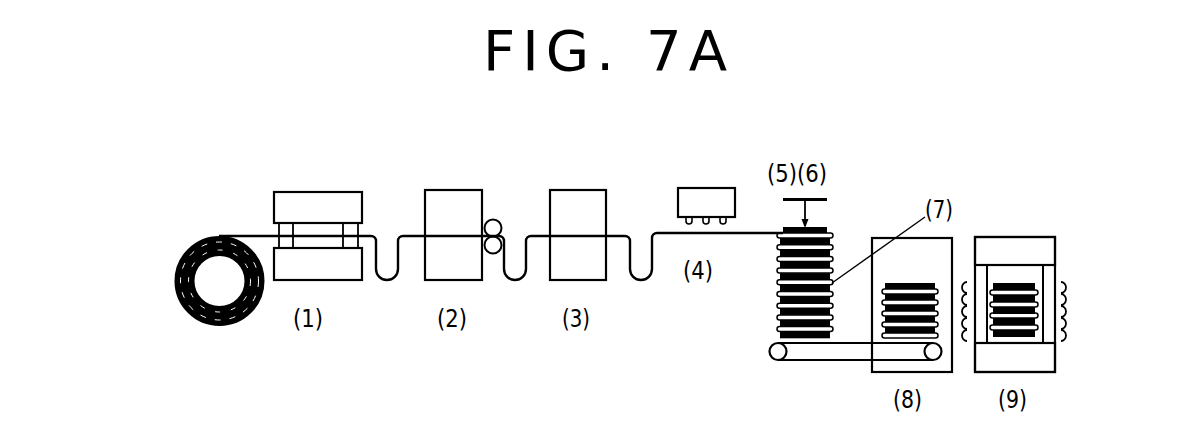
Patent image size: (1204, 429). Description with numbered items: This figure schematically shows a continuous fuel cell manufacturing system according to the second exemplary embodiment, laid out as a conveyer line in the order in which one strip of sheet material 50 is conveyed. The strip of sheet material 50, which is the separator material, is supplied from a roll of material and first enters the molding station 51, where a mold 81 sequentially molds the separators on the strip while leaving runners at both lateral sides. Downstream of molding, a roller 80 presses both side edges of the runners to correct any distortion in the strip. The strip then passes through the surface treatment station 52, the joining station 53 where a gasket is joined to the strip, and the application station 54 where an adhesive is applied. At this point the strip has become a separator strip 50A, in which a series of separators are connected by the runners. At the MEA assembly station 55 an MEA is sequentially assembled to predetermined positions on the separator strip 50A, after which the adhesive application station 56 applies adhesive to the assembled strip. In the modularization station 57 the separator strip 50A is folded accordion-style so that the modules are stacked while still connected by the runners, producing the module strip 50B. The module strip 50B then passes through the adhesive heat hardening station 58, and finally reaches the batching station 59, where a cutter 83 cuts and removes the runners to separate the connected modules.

The strip of sheet material 50 is at (248, 235).
The separator strip 50A is at (407, 236).
The module strip 50B is at (779, 297).
The molding station 51 is at (340, 281).
The surface treatment station 52 is at (447, 190).
The joining station 53 is at (567, 190).
The application station 54 is at (688, 188).
The MEA assembly station 55 is at (793, 204).
The adhesive application station 56 is at (833, 243).
The modularization station 57 is at (779, 288).
The adhesive heat hardening station 58 is at (875, 372).
The batching station 59 is at (1035, 363).
The roller 80 is at (498, 220).
The mold 81 is at (315, 205).
The cutter 83 is at (1020, 237).
The membrane electrode assembly MEA is at (827, 197).